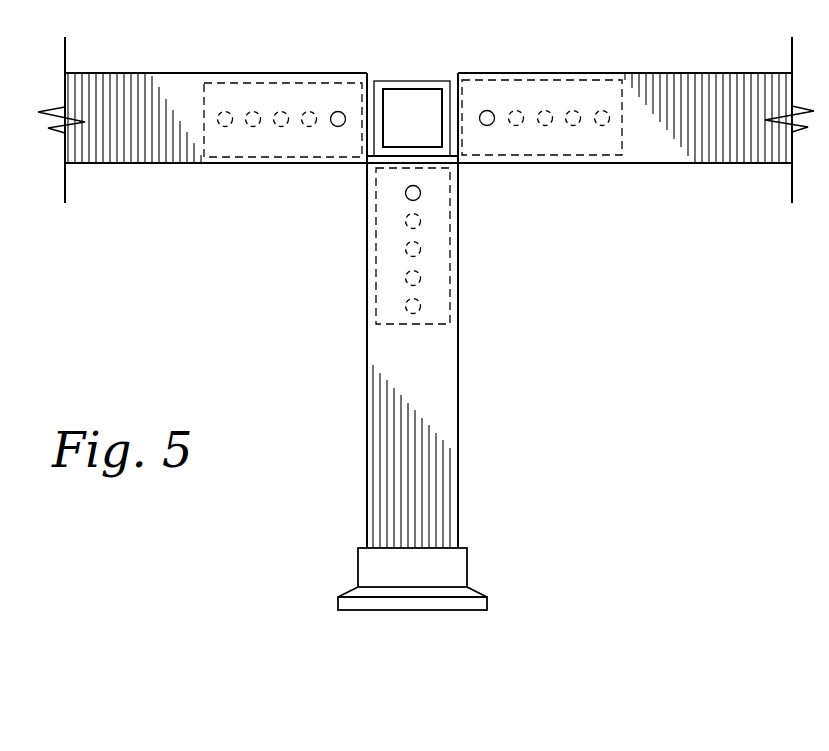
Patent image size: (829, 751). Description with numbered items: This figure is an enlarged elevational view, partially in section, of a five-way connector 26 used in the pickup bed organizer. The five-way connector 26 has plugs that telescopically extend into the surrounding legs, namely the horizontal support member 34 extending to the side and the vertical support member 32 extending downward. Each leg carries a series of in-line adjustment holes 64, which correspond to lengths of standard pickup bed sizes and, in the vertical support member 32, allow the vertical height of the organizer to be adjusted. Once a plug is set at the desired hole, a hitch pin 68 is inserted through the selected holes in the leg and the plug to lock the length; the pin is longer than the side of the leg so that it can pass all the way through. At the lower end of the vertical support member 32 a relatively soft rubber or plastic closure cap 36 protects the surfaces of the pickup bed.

The five-way connector 26 is at (411, 70).
The vertical support member 32 is at (450, 381).
The horizontal support member 34 is at (671, 72).
The closure cap 36 is at (455, 563).
The adjustment holes 64 is at (573, 109).
The hitch pin 68 is at (488, 110).